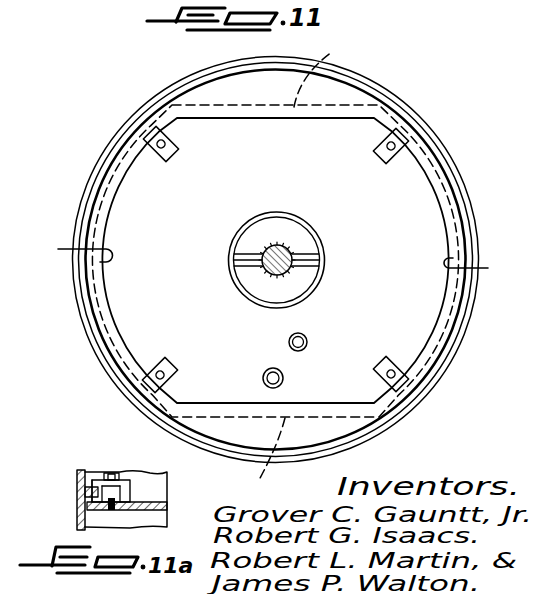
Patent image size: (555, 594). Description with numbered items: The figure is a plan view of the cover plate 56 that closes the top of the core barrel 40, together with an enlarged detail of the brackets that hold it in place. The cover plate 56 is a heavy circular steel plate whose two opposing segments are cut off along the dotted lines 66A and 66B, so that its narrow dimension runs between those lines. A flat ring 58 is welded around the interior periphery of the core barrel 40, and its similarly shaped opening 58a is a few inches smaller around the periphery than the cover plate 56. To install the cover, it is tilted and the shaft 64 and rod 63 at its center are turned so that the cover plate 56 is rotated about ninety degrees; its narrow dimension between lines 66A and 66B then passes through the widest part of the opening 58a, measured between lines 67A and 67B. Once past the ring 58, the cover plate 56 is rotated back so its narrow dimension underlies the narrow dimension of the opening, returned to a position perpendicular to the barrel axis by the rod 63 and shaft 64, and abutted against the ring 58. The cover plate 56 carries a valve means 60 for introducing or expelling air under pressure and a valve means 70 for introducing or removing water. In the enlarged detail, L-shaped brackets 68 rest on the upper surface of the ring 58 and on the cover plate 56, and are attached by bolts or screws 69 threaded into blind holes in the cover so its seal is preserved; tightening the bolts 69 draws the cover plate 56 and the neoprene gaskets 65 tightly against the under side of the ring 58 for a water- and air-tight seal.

In FIG. 11, the core barrel 40 is at (239, 239).
In FIG. 11a, the core barrel 40 is at (77, 471).
In FIG. 11, the cover plate 56 is at (393, 114).
In FIG. 11a, the cover plate 56 is at (92, 510).
In FIG. 11a, the flat ring 58 is at (90, 480).
In FIG. 11, the opening of the ring 58a is at (419, 172).
In FIG. 11, the valve means 60 is at (284, 381).
In FIG. 11, the rod 63 is at (285, 270).
In FIG. 11, the shaft 64 is at (285, 248).
In FIG. 11a, the neoprene gaskets 65 is at (85, 496).
In FIG. 11, the dotted line 66A is at (335, 72).
In FIG. 11, the dotted line 66B is at (278, 460).
In FIG. 11, the line 67A is at (65, 248).
In FIG. 11, the line 67B is at (488, 270).
In FIG. 11, the L-shaped brackets 68 is at (176, 152).
In FIG. 11a, the L-shaped brackets 68 is at (130, 481).
In FIG. 11a, the bolts or screws 69 is at (114, 474).
In FIG. 11, the valve means 70 is at (308, 339).